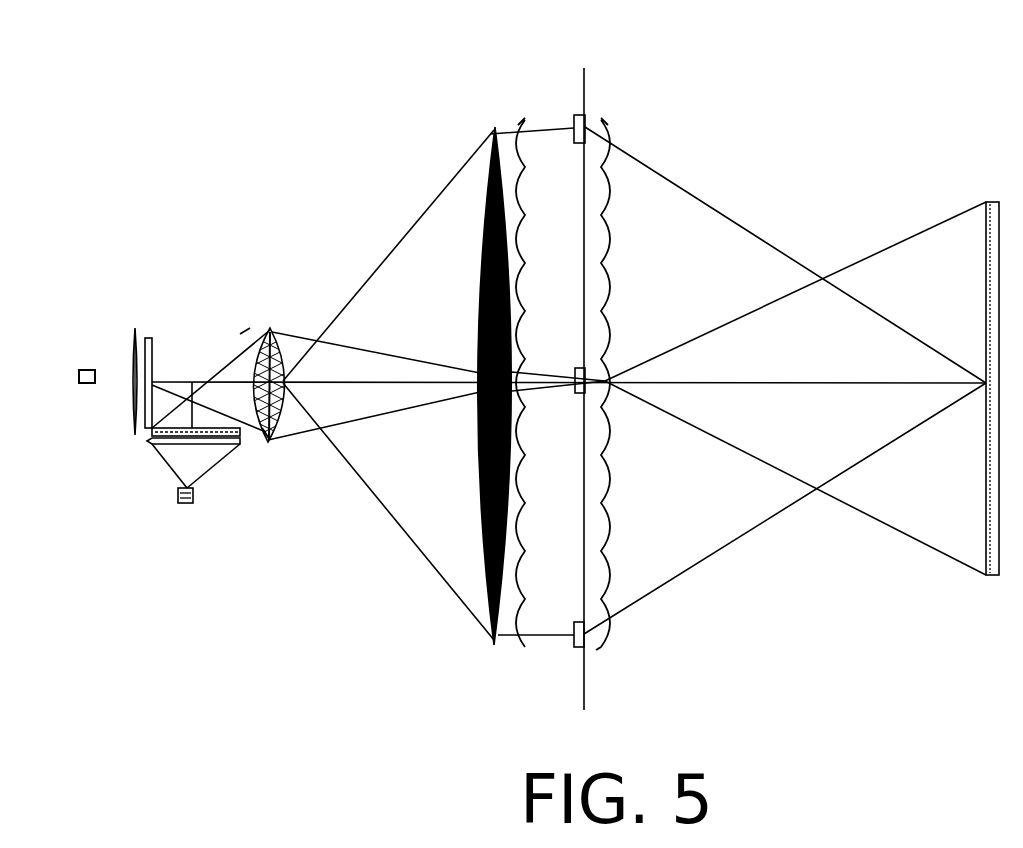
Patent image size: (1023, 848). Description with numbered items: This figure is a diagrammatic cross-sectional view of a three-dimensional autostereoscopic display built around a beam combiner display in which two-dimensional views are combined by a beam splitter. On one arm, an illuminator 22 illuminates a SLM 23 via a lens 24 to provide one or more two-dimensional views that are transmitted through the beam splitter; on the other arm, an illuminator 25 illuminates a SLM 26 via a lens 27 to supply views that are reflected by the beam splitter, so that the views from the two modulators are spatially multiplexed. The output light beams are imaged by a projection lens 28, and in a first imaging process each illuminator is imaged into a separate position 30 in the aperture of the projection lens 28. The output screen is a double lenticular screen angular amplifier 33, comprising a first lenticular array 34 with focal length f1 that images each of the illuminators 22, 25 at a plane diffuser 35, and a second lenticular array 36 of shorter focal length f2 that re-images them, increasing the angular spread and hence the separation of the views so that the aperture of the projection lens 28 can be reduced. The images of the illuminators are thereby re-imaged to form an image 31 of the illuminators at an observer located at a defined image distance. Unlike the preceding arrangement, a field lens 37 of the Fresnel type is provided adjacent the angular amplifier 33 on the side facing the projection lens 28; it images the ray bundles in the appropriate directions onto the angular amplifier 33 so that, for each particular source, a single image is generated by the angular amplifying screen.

The illuminator 22 is at (78, 373).
The SLM 23 is at (152, 338).
The lens 24 is at (132, 348).
The illuminator 25 is at (193, 503).
The SLM 26 is at (245, 440).
The lens 27 is at (157, 448).
The projection lens 28 is at (278, 338).
The position of illuminator image in the aperture of the projection lens 30 is at (270, 437).
The image of the illuminators 31 is at (988, 573).
The double lenticular screen angular amplifier 33 is at (602, 653).
The first lenticular array 34 is at (538, 122).
The plane diffuser 35 is at (585, 83).
The second lenticular array 36 is at (600, 127).
The field lens 37 is at (492, 592).